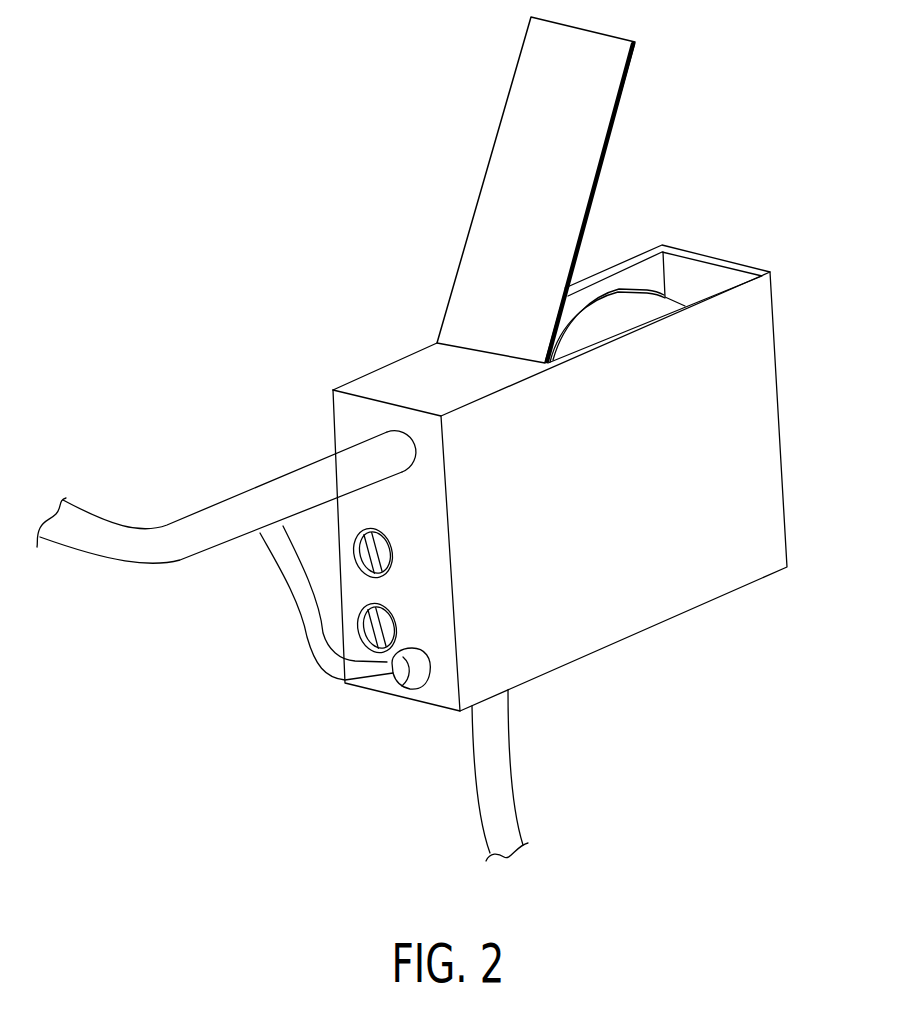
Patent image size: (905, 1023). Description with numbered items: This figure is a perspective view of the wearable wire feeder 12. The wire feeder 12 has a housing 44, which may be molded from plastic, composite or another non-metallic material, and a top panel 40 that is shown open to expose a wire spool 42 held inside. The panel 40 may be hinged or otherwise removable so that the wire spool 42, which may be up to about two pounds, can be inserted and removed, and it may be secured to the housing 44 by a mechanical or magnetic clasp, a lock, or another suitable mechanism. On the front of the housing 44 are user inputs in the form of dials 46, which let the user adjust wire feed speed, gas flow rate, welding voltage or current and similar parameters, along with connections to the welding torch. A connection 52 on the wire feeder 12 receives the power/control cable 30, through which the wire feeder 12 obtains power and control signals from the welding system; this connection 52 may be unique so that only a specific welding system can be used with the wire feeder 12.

The wire feeder 12 is at (746, 199).
The power/control cable 30 is at (487, 787).
The panel 40 is at (575, 173).
The wire spool 42 is at (617, 308).
The housing 44 is at (380, 377).
The dials 46 is at (355, 553).
The connection 52 is at (508, 707).